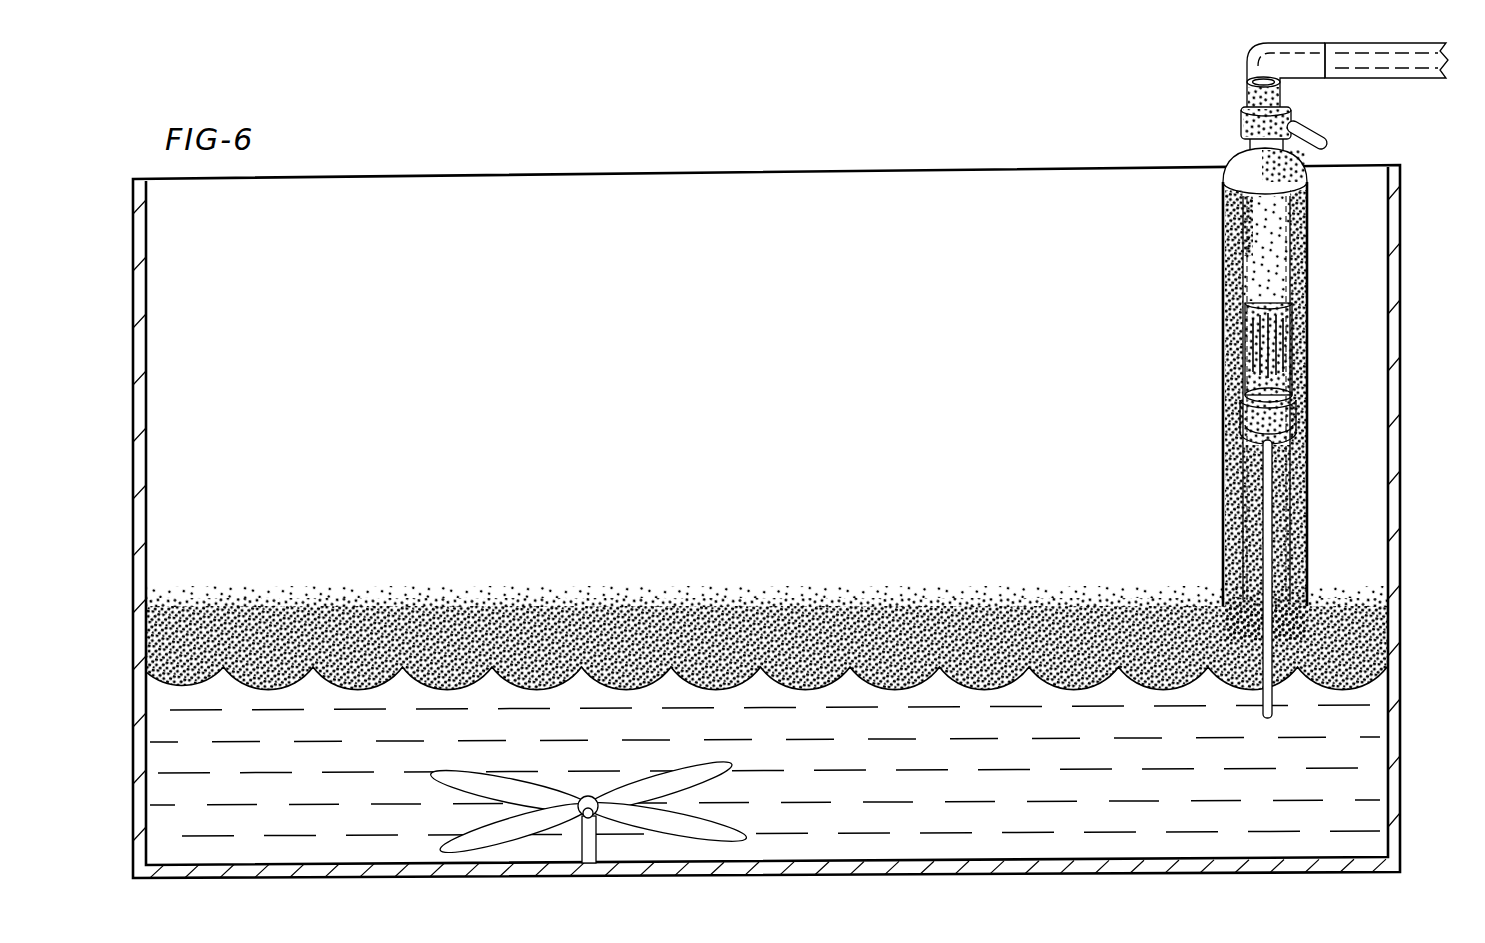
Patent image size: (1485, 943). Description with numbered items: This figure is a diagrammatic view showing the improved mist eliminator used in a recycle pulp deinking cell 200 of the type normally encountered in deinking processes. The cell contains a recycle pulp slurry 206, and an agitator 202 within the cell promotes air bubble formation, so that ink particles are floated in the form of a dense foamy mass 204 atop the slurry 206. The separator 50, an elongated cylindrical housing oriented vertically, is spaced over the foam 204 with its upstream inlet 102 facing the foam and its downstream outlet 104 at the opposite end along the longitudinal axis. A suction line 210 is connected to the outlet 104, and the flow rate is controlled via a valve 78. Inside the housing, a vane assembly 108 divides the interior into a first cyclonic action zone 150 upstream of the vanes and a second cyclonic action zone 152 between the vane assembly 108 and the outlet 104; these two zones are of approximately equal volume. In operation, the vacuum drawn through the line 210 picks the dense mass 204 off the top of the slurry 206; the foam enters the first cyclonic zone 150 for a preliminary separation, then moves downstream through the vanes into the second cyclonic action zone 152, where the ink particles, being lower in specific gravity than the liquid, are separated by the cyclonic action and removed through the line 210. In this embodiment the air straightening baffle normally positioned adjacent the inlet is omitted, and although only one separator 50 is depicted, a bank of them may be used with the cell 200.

The separator 50 is at (1299, 366).
The valve 78 is at (1332, 148).
The upstream inlet 102 is at (1313, 608).
The downstream outlet 104 is at (1282, 98).
The vane assembly 108 is at (1250, 410).
The first cyclonic action zone 150 is at (1303, 480).
The second cyclonic action zone 152 is at (1228, 280).
The deinking cell 200 is at (455, 405).
The agitator 202 is at (683, 777).
The dense foamy mass 204 is at (525, 612).
The recycle pulp slurry 206 is at (291, 712).
The suction line 210 is at (1366, 48).